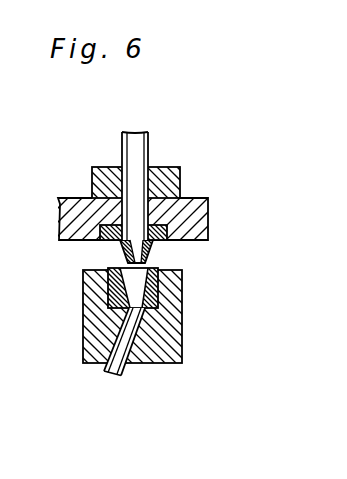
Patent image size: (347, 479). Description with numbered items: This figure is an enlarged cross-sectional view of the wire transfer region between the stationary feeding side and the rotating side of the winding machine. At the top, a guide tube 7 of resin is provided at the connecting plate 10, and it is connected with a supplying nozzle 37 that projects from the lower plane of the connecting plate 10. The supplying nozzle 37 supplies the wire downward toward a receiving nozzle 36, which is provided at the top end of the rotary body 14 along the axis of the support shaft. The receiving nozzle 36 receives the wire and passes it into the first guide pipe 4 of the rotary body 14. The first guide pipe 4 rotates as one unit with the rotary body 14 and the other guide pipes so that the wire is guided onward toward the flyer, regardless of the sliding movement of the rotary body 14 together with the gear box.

The guide tube 7 is at (148, 133).
The connecting plate 10 is at (208, 220).
The supplying nozzle 37 is at (147, 252).
The receiving nozzle 36 is at (160, 298).
The rotary body 14 is at (173, 340).
The first guide pipe 4 is at (120, 372).